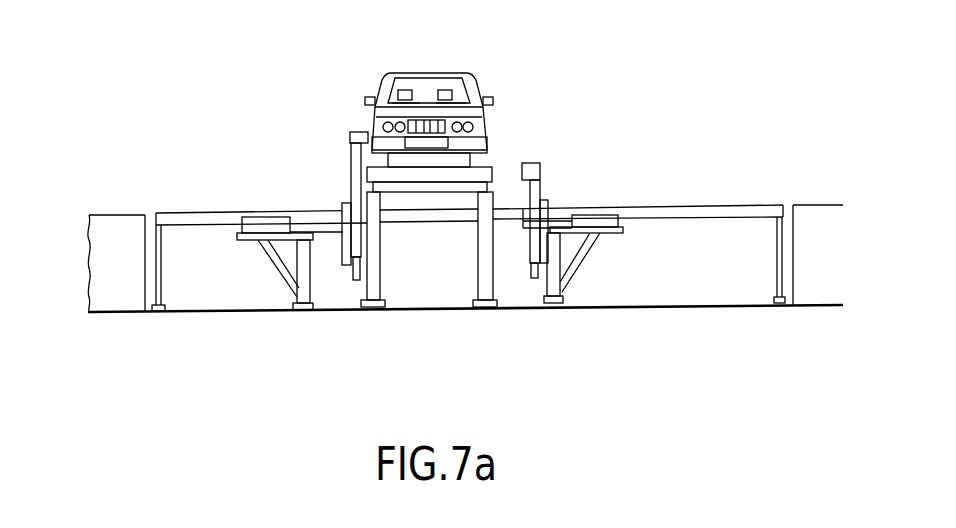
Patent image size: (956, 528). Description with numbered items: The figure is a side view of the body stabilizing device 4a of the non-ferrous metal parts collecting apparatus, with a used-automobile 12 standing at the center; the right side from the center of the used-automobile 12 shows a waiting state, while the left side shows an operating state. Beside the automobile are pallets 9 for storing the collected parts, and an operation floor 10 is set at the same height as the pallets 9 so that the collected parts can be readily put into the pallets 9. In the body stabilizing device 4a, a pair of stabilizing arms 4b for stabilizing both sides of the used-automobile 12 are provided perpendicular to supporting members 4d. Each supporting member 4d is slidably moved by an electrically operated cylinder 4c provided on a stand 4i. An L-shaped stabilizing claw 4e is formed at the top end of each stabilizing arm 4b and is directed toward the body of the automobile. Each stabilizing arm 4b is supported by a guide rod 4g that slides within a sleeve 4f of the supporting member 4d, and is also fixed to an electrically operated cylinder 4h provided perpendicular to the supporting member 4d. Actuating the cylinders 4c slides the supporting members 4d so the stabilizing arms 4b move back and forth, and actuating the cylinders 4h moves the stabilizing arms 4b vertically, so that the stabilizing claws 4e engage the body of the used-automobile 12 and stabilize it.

The used-automobile 12 is at (428, 78).
The pallets 9 is at (118, 213).
The operation floor 10 is at (178, 213).
The body stabilizing device 4a is at (433, 313).
The stabilizing arm 4b is at (355, 160).
The electrically operated cylinder 4c is at (258, 218).
The supporting member 4d is at (332, 228).
The L-shaped stabilizing claw 4e is at (368, 128).
The sleeve 4f is at (360, 258).
The guide rod 4g is at (357, 292).
The electrically operated cylinder 4h is at (343, 205).
The stand 4i is at (278, 238).